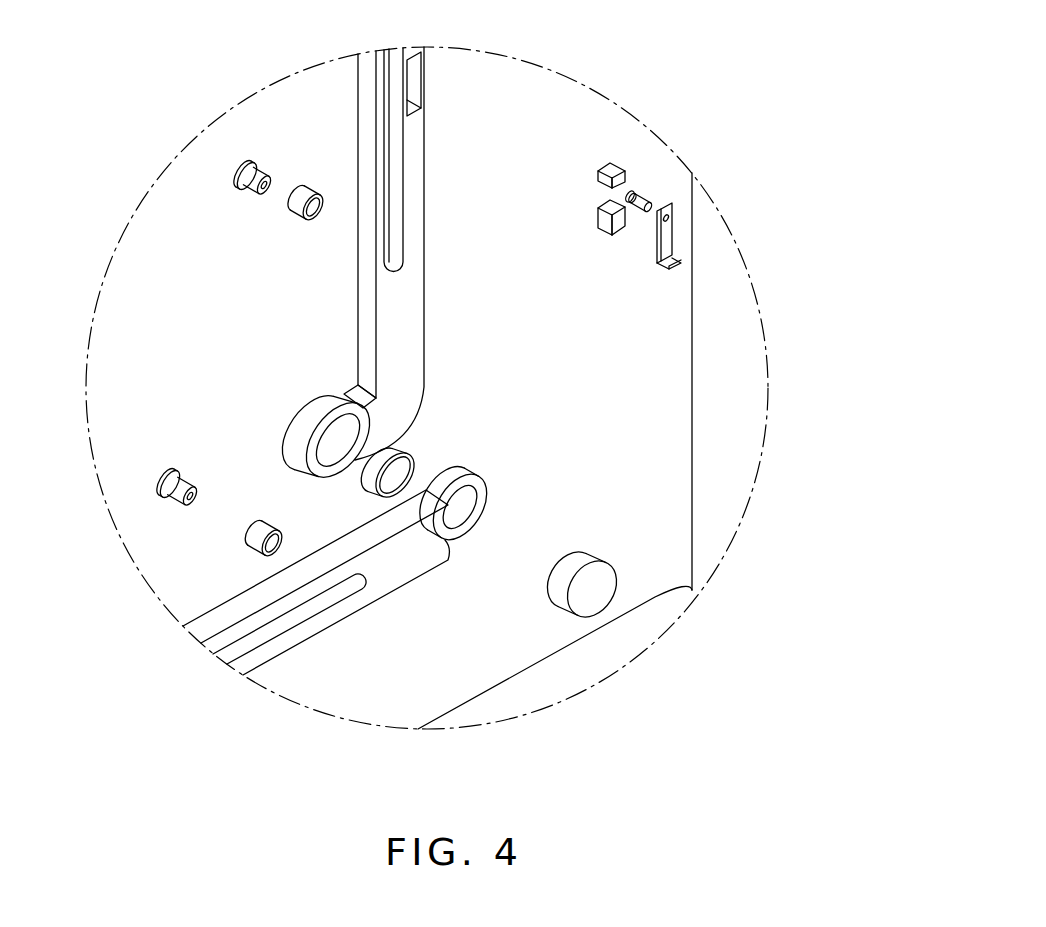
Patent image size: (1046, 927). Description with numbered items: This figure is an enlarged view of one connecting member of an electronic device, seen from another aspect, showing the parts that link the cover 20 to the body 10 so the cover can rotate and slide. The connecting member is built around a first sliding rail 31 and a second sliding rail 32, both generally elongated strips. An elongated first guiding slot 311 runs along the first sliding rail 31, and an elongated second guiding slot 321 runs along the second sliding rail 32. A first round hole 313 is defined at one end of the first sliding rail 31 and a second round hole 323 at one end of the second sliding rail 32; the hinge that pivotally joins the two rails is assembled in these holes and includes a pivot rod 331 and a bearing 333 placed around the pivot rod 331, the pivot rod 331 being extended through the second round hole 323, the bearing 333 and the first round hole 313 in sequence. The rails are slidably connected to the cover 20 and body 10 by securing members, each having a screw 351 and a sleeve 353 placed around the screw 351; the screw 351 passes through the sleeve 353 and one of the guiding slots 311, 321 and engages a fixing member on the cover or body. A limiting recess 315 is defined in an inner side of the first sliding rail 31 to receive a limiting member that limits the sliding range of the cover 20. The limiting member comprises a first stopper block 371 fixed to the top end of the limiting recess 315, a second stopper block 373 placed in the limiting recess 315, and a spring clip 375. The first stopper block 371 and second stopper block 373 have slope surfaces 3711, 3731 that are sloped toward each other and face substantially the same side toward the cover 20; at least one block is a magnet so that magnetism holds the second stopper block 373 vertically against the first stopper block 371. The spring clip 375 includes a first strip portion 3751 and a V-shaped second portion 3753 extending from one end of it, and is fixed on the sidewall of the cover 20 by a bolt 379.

The body 10 is at (670, 605).
The cover 20 is at (733, 370).
The first sliding rail 31 is at (463, 244).
The first guiding slot 311 is at (388, 145).
The first round hole 313 is at (332, 432).
The limiting recess 315 is at (413, 78).
The second sliding rail 32 is at (350, 582).
The second guiding slot 321 is at (237, 655).
The second round hole 323 is at (470, 506).
The pivot rod 331 is at (600, 592).
The bearing 333 is at (395, 468).
The screw 351 is at (243, 166).
The sleeve 353 is at (306, 190).
The first stopper block 371 is at (618, 165).
The slope surface 3711 is at (630, 181).
The second stopper block 373 is at (605, 222).
The slope surface 3731 is at (615, 228).
The spring clip 375 is at (777, 250).
The first strip portion 3751 is at (668, 228).
The second portion 3753 is at (673, 257).
The bolt 379 is at (650, 203).